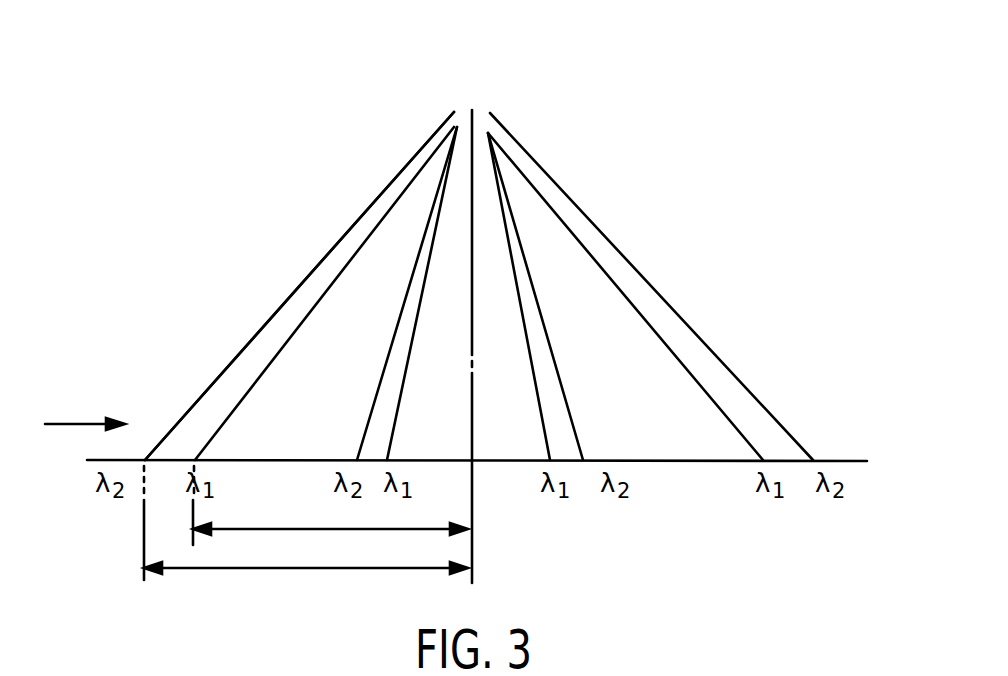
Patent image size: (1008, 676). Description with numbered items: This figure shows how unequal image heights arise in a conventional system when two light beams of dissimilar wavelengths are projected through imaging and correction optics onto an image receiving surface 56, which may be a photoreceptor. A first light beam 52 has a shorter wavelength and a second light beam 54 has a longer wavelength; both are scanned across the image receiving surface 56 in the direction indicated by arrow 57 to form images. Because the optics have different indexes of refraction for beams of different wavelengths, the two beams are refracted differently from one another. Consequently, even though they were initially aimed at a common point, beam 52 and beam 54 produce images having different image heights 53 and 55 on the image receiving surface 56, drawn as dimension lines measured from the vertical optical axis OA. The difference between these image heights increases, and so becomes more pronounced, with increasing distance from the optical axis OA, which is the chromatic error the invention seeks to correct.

The light beam 52 is at (300, 318).
The image height 53 is at (277, 529).
The light beam 54 is at (205, 392).
The image height 55 is at (256, 568).
The image receiving surface 56 is at (848, 460).
The arrow 57 is at (73, 424).
The optical axis OA is at (478, 127).